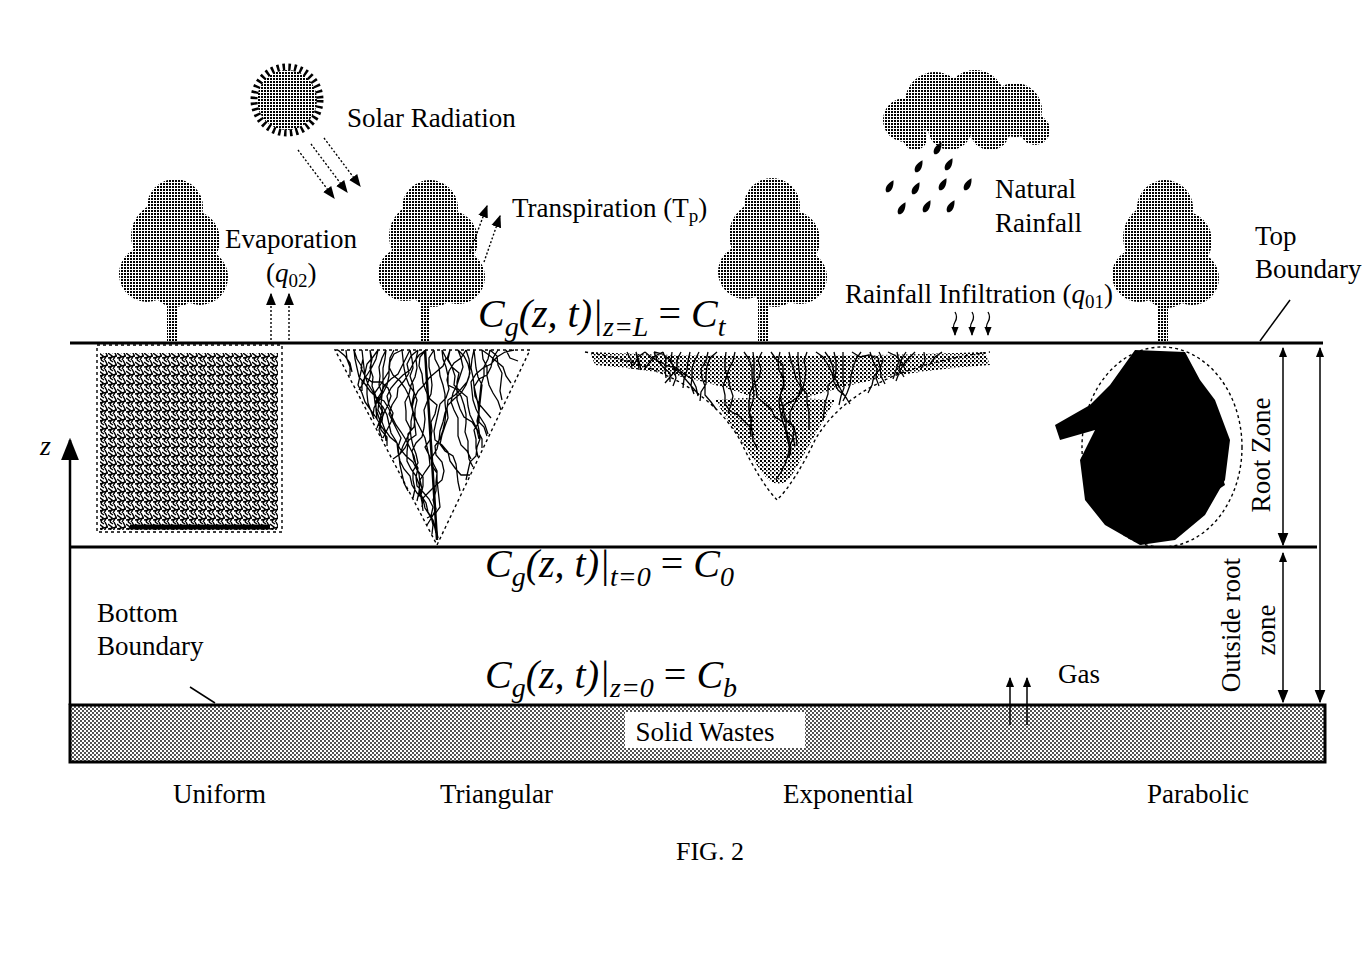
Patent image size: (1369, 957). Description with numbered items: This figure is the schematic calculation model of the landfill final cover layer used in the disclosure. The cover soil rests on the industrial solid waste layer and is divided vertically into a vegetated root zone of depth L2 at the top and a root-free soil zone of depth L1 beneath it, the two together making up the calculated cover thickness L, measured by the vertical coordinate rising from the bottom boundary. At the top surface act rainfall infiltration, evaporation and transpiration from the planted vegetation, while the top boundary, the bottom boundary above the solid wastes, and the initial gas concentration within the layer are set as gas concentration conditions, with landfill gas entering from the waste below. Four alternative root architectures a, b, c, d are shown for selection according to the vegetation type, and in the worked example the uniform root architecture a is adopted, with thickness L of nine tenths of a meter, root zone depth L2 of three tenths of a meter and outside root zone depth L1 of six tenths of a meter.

The uniform root distribution a is at (189, 577).
The triangular root distribution b is at (432, 579).
The exponential root distribution c is at (787, 580).
The parabolic root distribution d is at (1148, 578).
The thickness of the cover layer L is at (1332, 525).
The depth of the outside root zone L1 is at (1300, 627).
The depth of the root zone L2 is at (1299, 446).